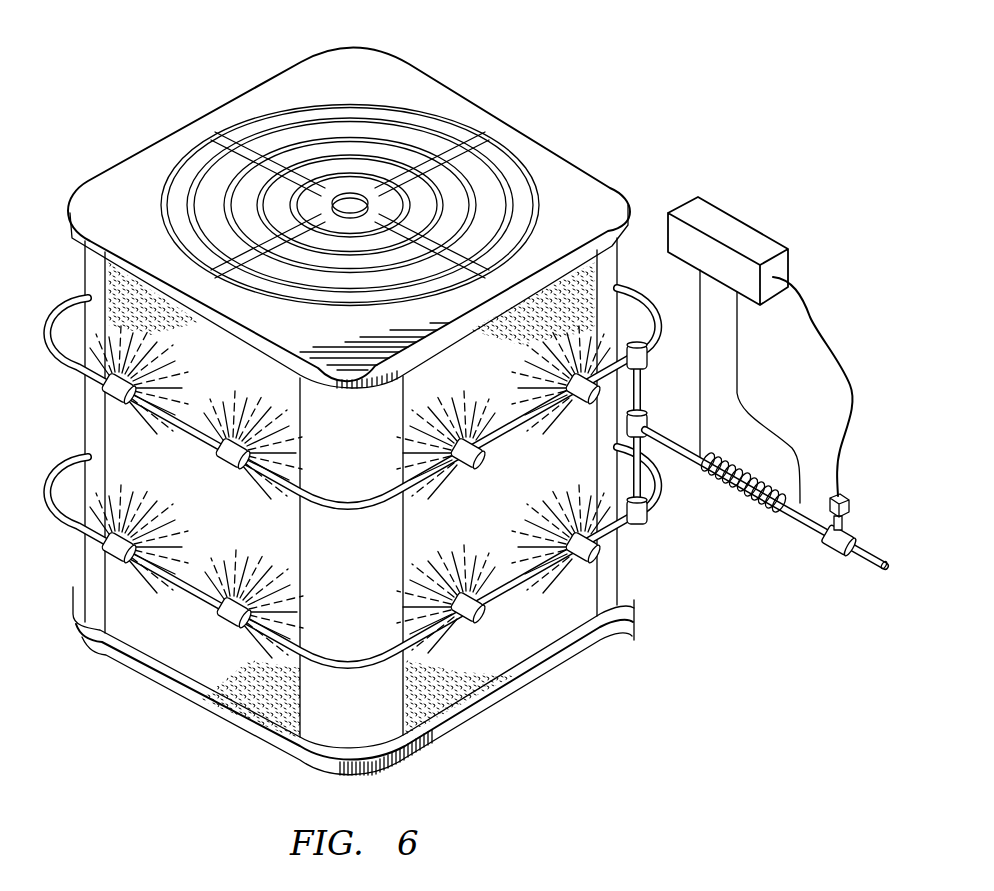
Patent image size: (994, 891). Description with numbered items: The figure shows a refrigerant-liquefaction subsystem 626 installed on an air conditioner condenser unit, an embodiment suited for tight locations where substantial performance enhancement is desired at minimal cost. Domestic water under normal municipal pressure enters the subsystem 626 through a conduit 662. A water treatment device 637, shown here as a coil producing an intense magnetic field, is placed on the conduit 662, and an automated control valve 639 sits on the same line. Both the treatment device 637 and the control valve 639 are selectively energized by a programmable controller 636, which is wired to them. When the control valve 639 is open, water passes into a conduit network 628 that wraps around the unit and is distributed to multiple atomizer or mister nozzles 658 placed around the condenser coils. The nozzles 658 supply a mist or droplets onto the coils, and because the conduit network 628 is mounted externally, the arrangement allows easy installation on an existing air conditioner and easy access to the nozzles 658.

The refrigerant-liquefaction subsystem 626 is at (208, 84).
The conduit network 628 is at (644, 377).
The atomizer or mister nozzles 658 is at (222, 457).
The programmable controller 636 is at (753, 233).
The water treatment device 637 is at (743, 500).
The automated control valve 639 is at (813, 547).
The conduit 662 is at (867, 566).